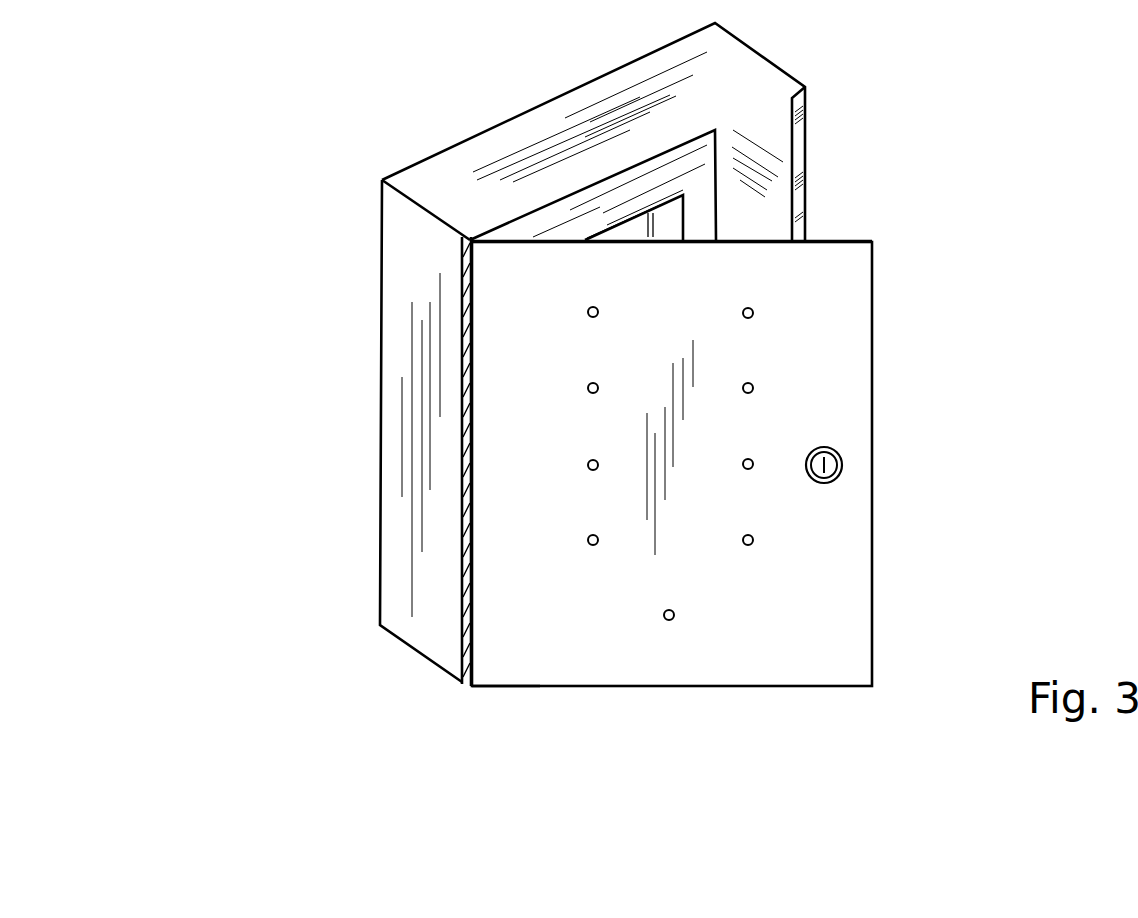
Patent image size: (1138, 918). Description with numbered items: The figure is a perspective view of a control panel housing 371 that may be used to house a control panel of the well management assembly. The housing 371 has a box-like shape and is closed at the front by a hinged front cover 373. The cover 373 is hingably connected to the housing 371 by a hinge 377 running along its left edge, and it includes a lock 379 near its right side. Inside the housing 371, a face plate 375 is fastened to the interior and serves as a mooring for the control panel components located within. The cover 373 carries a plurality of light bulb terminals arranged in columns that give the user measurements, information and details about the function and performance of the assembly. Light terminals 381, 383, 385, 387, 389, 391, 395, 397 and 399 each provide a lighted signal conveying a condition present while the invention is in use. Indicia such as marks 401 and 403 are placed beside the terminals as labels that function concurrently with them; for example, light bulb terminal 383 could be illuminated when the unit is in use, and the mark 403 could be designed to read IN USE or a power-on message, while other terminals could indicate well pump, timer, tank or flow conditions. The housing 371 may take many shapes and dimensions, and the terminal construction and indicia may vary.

The control panel housing 371 is at (313, 652).
The hinged front cover 373 is at (857, 257).
The face plate 375 is at (660, 217).
The hinge 377 is at (465, 685).
The lock 379 is at (843, 470).
The light terminal 381 is at (753, 314).
The light bulb terminal 383 is at (662, 615).
The light terminal 385 is at (753, 388).
The light terminal 387 is at (753, 468).
The light terminal 389 is at (753, 542).
The light terminal 391 is at (588, 545).
The light terminal 395 is at (588, 467).
The light terminal 397 is at (587, 391).
The light terminal 399 is at (587, 315).
The mark 401 is at (683, 598).
The mark 403 is at (680, 635).